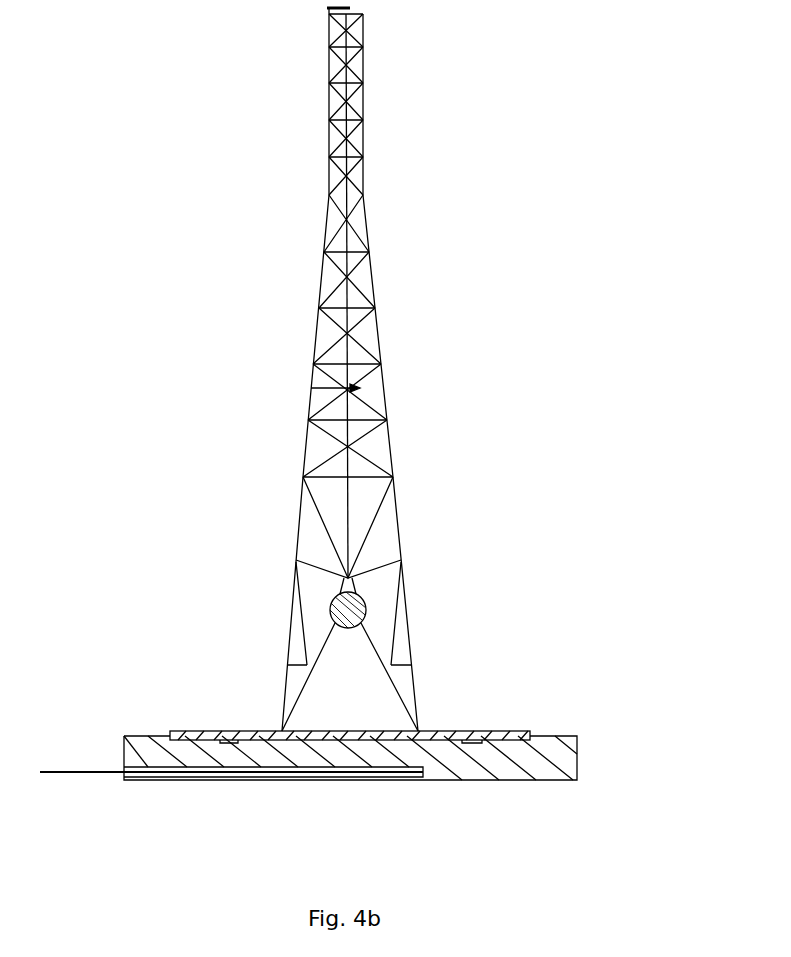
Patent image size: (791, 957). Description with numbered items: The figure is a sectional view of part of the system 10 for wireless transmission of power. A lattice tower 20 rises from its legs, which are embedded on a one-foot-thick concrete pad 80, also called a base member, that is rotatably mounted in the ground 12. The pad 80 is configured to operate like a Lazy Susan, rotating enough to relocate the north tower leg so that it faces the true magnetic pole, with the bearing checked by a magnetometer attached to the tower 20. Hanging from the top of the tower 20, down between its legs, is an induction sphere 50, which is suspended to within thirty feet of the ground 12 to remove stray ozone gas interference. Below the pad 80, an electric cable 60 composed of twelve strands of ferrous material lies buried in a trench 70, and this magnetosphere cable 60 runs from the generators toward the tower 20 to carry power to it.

The system for wireless transmission of power 10 is at (586, 83).
The tower 20 is at (415, 292).
The induction sphere 50 is at (355, 606).
The ground 12 is at (563, 736).
The concrete pad 80 is at (474, 731).
The trench 70 is at (195, 780).
The electric cable 60 is at (80, 773).